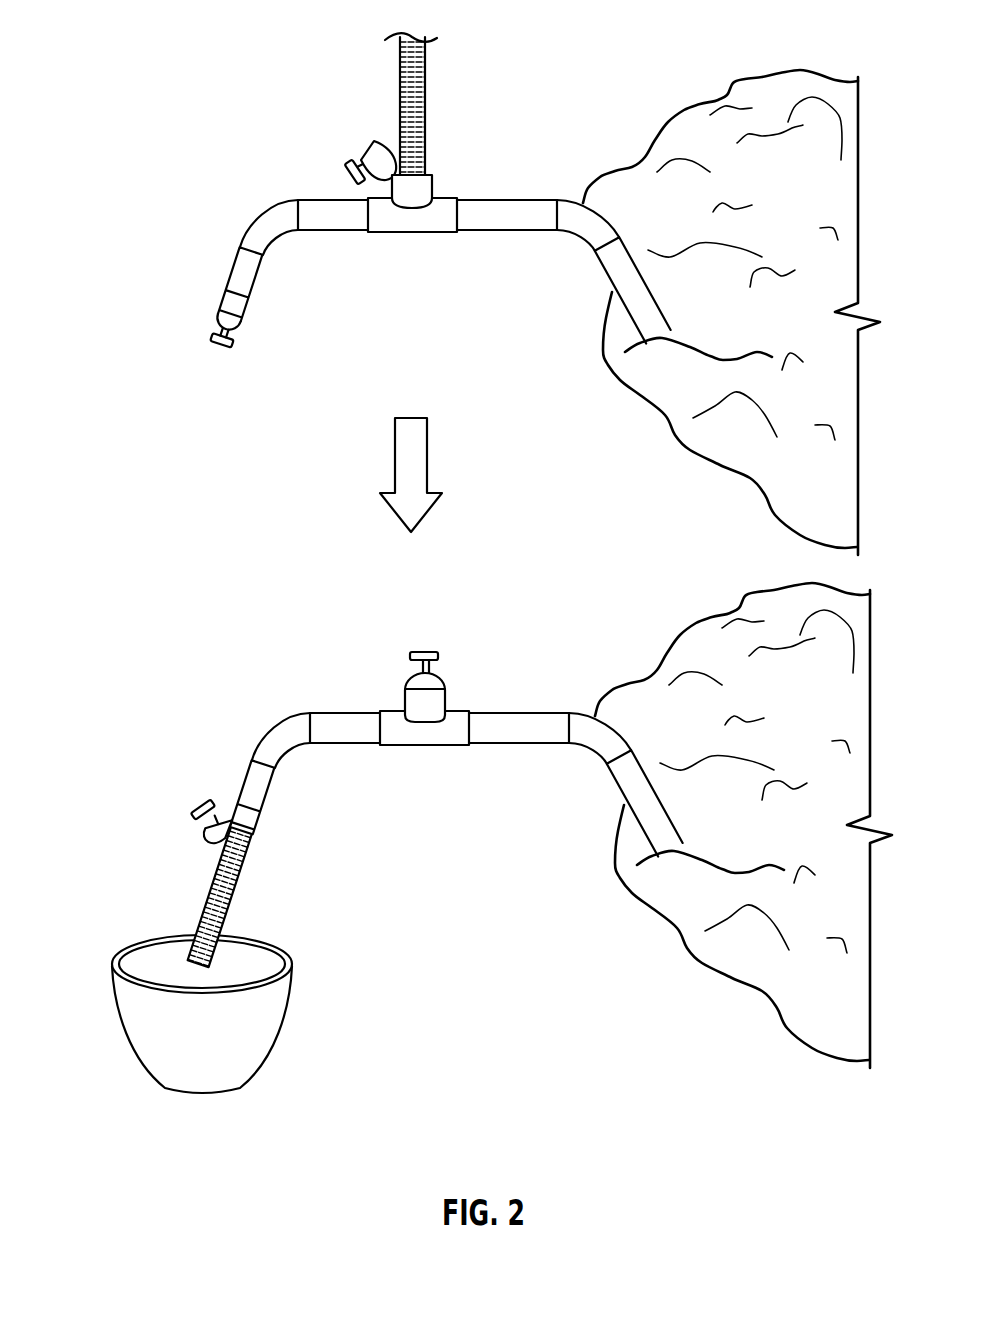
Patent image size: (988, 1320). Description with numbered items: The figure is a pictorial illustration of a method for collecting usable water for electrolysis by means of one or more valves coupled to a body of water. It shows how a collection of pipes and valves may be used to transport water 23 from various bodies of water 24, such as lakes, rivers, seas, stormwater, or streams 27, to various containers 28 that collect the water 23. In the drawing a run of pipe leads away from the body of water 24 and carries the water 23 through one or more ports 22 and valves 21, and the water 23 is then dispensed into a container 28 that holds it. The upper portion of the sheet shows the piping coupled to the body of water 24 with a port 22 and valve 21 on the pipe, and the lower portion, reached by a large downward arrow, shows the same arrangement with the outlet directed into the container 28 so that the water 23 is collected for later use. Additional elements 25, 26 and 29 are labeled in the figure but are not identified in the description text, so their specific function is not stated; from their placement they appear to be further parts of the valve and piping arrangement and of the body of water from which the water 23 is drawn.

The valve 21 is at (212, 296).
The port 22 is at (361, 142).
The water 23 is at (430, 74).
The body of water 24 is at (730, 134).
The shut-off valve 25 is at (400, 690).
The outlet valve 26 is at (231, 808).
The stream 27 is at (208, 888).
The container 28 is at (117, 1013).
The rock / wall 29 is at (737, 938).